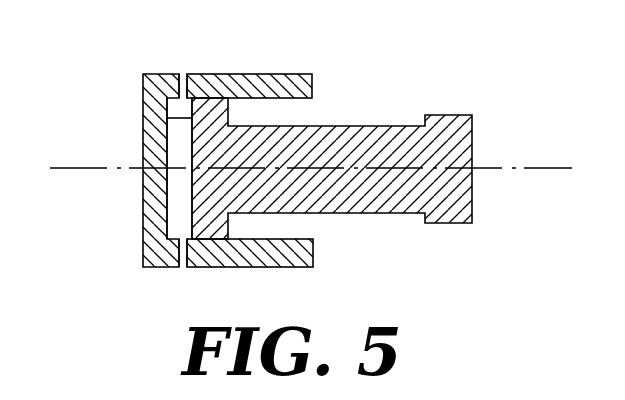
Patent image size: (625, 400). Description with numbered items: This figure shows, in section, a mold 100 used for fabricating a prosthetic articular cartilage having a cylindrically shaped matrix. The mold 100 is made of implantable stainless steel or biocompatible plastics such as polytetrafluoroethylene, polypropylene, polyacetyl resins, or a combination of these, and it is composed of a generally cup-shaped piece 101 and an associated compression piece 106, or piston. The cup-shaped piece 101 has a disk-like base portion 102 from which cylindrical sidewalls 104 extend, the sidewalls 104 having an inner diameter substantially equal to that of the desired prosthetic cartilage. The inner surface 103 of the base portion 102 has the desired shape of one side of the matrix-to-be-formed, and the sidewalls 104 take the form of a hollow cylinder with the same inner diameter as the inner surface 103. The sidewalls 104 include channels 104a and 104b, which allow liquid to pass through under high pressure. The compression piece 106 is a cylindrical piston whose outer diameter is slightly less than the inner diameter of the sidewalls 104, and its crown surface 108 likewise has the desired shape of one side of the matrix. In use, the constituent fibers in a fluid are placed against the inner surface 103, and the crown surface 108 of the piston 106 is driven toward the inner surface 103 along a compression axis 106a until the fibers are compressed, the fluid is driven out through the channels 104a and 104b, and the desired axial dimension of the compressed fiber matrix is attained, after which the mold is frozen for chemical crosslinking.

The mold 100 is at (297, 165).
The cup-shaped piece 101 is at (228, 73).
The base portion 102 is at (143, 222).
The inner surface 103 is at (178, 190).
The sidewalls 104 is at (272, 267).
The channel 104a is at (183, 82).
The channel 104b is at (184, 262).
The compression piece 106 is at (326, 126).
The compression axis 106a is at (74, 168).
The crown surface 108 is at (167, 118).